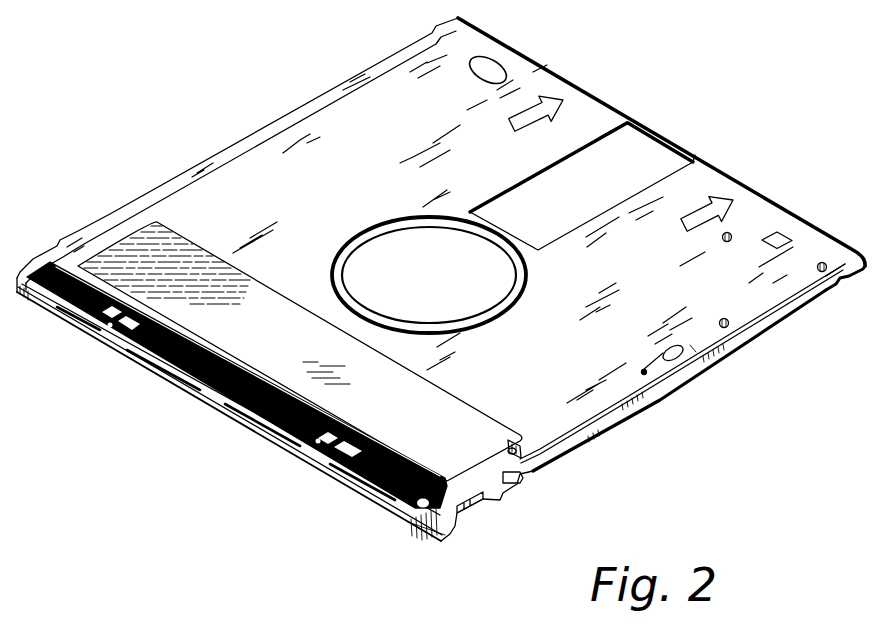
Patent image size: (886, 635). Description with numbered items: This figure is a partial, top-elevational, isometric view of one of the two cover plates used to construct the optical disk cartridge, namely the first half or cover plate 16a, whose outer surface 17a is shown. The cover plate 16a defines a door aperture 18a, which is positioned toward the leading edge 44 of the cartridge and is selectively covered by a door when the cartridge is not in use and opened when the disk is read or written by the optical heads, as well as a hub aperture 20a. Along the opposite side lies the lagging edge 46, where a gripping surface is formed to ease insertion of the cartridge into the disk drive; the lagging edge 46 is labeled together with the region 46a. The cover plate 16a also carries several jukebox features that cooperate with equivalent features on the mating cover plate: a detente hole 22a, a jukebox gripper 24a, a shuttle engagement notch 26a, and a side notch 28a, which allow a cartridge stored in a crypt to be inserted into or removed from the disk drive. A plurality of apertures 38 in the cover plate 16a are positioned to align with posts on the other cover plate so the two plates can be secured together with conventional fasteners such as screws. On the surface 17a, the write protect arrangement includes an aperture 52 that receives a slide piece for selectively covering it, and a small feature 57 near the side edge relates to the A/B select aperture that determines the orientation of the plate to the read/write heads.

The cover plate 16a is at (441, 285).
The surface 17a is at (441, 279).
The door aperture 18a is at (591, 206).
The hub aperture 20a is at (449, 294).
The detente hole 22a is at (493, 61).
The jukebox gripper 24a is at (476, 512).
The shuttle engagement notch 26a is at (525, 452).
The side notch 28a is at (797, 305).
The apertures 38 is at (735, 326).
The leading edge 44 is at (590, 94).
The lagging edge 46 is at (237, 385).
The connector contacts 46a is at (242, 402).
The aperture 52 is at (690, 356).
The pin hole 57 is at (648, 378).